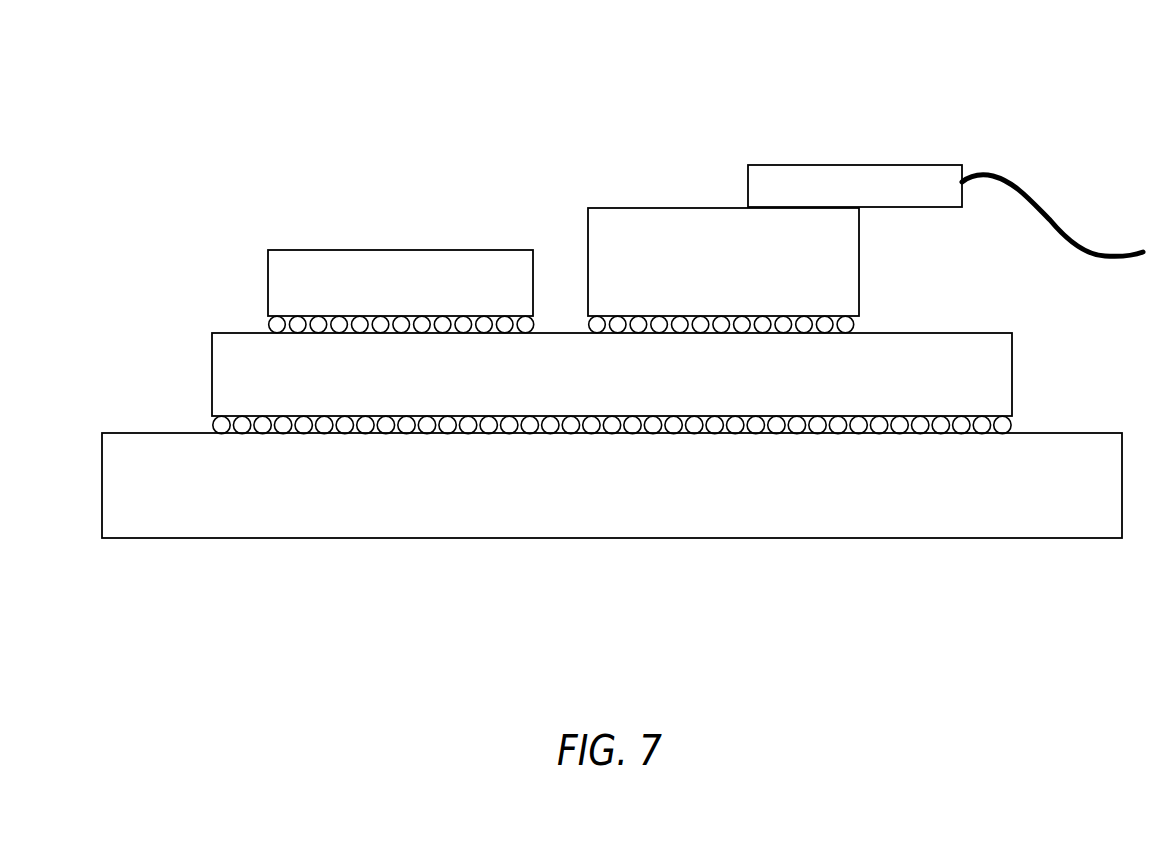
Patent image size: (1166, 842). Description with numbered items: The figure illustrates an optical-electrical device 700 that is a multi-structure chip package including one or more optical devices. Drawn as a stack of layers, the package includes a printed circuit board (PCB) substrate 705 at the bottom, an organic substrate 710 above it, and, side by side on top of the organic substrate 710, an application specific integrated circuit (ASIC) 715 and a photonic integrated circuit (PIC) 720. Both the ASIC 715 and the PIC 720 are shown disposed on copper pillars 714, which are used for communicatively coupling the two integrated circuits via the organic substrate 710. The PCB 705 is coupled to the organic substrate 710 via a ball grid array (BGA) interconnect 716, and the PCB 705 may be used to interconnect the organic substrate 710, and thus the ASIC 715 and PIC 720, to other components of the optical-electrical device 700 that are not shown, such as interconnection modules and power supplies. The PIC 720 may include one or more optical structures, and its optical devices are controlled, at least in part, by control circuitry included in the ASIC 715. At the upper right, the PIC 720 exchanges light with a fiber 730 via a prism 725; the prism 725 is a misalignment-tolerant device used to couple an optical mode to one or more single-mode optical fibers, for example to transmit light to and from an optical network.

The optical-electrical device 700 is at (280, 93).
The printed circuit board (PCB) substrate 705 is at (593, 512).
The organic substrate 710 is at (592, 404).
The copper pillars 714 is at (263, 325).
The application specific integrated circuit (ASIC) 715 is at (380, 312).
The ball grid array (BGA) interconnect 716 is at (195, 420).
The photonic integrated circuit (PIC) 720 is at (704, 290).
The prism 725 is at (835, 196).
The fiber 730 is at (1012, 178).